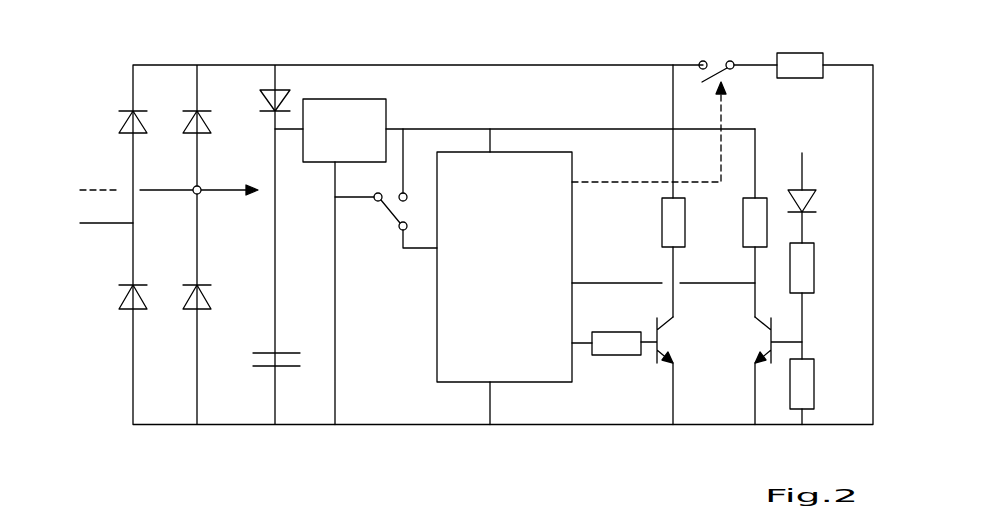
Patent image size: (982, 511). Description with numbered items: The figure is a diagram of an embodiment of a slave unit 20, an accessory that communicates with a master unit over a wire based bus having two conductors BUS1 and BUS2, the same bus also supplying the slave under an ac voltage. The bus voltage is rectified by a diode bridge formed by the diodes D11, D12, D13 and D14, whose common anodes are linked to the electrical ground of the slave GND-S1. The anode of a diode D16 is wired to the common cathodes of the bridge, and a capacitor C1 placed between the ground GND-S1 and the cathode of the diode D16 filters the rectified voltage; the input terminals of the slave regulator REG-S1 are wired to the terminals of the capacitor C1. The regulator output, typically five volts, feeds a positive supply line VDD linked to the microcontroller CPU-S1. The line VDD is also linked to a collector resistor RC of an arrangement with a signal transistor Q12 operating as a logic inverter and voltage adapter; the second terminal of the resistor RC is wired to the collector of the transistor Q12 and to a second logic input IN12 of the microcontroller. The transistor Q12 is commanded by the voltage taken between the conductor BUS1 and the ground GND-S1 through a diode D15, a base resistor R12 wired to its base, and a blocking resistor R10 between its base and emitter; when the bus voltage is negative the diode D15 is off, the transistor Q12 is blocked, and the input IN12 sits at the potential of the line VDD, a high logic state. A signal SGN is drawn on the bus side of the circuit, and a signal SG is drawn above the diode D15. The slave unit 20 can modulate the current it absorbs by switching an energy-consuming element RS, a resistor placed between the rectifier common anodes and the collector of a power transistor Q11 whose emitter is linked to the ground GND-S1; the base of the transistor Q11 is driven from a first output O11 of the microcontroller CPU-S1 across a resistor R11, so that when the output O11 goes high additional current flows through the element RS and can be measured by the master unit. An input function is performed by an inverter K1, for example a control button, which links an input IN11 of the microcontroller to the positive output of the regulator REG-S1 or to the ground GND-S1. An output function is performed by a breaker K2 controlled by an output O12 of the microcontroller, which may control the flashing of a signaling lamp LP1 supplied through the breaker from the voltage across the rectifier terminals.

The slave unit 20 is at (88, 148).
The rectifier bridge diode D11 is at (122, 111).
The rectifier bridge diode D12 is at (184, 111).
The rectifier bridge diode D13 is at (184, 286).
The rectifier bridge diode D14 is at (119, 286).
The diode D15 is at (821, 216).
The diode D16 is at (261, 113).
The capacitor C1 is at (270, 373).
The slave regulator REG-S1 is at (330, 130).
The microcontroller CPU-S1 is at (504, 255).
The inverter K1 is at (386, 191).
The breaker K2 is at (716, 59).
The signaling lamp LP1 is at (800, 55).
The element consuming electrical energy RS is at (657, 191).
The collector resistor RC is at (740, 223).
The power transistor Q11 is at (675, 371).
The signal transistor Q12 is at (763, 371).
The blocking resistor R10 is at (824, 392).
The resistor R11 is at (616, 358).
The base resistor R12 is at (822, 301).
The bus conductor BUS1 is at (72, 190).
The bus conductor BUS2 is at (79, 223).
The signal line SGN is at (199, 178).
The positive supply line VDD is at (570, 115).
The electrical ground of the slave GND-S1 is at (412, 293).
The input IN11 is at (464, 249).
The second logic input IN12 is at (640, 283).
The first output O11 is at (565, 345).
The output O12 is at (631, 137).
The signal input SG is at (794, 161).